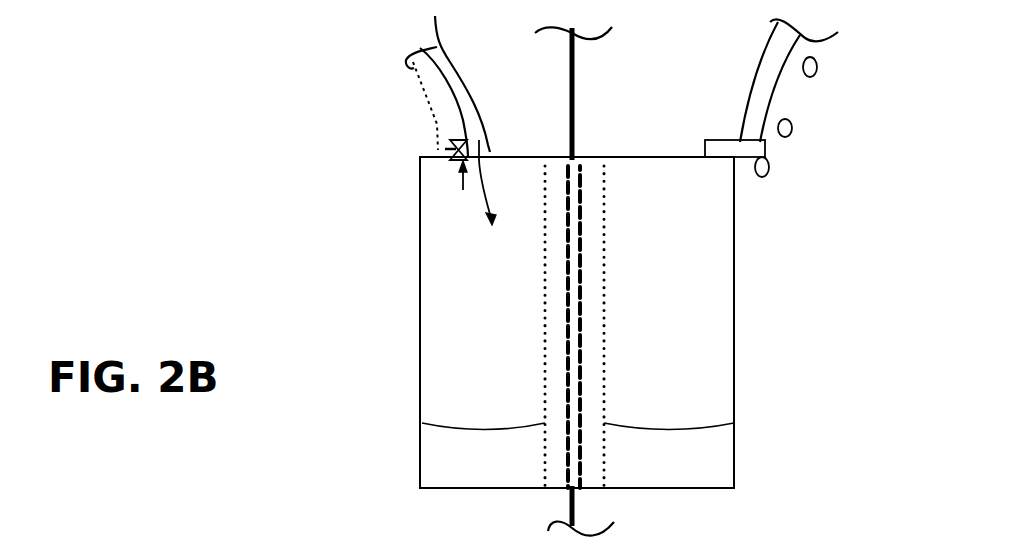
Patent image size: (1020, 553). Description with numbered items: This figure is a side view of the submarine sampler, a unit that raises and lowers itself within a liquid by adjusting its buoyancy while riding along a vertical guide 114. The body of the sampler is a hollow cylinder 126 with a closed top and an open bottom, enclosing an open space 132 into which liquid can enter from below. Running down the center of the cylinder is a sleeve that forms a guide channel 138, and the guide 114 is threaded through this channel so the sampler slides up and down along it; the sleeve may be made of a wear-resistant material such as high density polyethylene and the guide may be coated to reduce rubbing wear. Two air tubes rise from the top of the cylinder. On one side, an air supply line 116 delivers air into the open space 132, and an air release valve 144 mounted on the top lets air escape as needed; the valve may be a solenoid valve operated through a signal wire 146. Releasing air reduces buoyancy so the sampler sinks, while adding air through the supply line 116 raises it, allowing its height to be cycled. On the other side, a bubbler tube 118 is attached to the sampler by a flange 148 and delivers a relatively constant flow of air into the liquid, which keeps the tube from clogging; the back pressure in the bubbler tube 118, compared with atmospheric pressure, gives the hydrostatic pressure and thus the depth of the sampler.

The guide 114 is at (574, 93).
The air supply line 116 is at (433, 50).
The bubbler tube 118 is at (760, 90).
The hollow cylinder 126 is at (418, 273).
The open space 132 is at (478, 360).
The guide channel 138 is at (594, 174).
The air release valve 144 is at (437, 153).
The signal wire 146 is at (437, 124).
The flange 148 is at (745, 148).